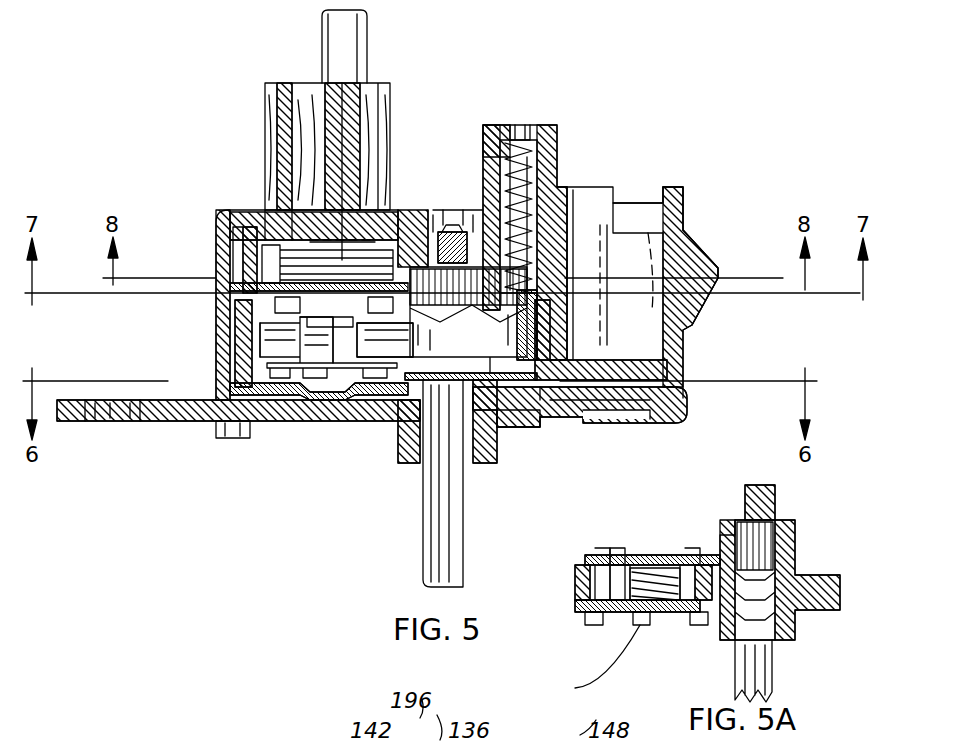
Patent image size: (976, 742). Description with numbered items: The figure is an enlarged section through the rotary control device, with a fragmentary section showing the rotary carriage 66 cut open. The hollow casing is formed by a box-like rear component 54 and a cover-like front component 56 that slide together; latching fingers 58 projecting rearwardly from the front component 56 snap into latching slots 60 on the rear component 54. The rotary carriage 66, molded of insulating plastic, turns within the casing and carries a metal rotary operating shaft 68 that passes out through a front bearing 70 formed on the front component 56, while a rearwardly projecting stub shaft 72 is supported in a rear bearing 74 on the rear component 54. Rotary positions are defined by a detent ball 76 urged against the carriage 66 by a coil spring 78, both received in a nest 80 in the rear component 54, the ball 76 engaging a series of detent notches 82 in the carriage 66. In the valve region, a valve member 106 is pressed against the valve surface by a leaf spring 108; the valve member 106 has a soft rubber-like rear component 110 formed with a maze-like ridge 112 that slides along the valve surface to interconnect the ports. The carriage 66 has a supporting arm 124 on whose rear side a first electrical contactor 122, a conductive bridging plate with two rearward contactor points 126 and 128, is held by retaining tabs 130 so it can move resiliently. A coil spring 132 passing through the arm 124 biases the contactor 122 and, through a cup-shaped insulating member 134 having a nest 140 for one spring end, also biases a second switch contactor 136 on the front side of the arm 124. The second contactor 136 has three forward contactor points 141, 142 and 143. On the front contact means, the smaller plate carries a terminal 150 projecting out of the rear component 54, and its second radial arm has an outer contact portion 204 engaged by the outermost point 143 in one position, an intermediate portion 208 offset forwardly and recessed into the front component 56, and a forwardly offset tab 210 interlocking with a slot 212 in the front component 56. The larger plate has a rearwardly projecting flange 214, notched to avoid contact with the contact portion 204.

In FIG. 5, the rear component 54 is at (690, 356).
In FIG. 5, the front component 56 is at (150, 412).
In FIG. 5, the latching fingers 58 is at (655, 210).
In FIG. 5, the latching slots 60 is at (650, 215).
In FIG. 5, the rotary carriage 66 is at (472, 345).
In FIG. 5A, the rotary carriage 66 is at (842, 610).
In FIG. 5, the rotary operating shaft 68 is at (447, 565).
In FIG. 5A, the rotary operating shaft 68 is at (772, 665).
In FIG. 5, the front bearing 70 is at (485, 463).
In FIG. 5, the stub shaft 72 is at (455, 232).
In FIG. 5A, the stub shaft 72 is at (778, 500).
In FIG. 5, the rear bearing 74 is at (420, 240).
In FIG. 5, the detent ball 76 is at (600, 230).
In FIG. 5, the coil spring 78 is at (490, 160).
In FIG. 5, the nest 80 is at (540, 135).
In FIG. 5, the detent notches 82 is at (522, 425).
In FIG. 5, the valve member 106 is at (285, 235).
In FIG. 5, the leaf spring 108 is at (274, 258).
In FIG. 5, the rear component 110 is at (264, 205).
In FIG. 5, the maze-like ridge 112 is at (270, 215).
In FIG. 5, the first electrical contactor 122 is at (367, 250).
In FIG. 5A, the first electrical contactor 122 is at (645, 575).
In FIG. 5A, the supporting arm 124 is at (578, 603).
In FIG. 5A, the contactor point 126 is at (685, 570).
In FIG. 5A, the contactor point 128 is at (600, 558).
In FIG. 5A, the retaining tabs 130 is at (700, 565).
In FIG. 5A, the coil spring 132 is at (650, 612).
In FIG. 5A, the insulating member 134 is at (640, 560).
In FIG. 5, the second switch contactor 136 is at (347, 398).
In FIG. 5A, the second switch contactor 136 is at (645, 625).
In FIG. 5A, the nest 140 is at (620, 548).
In FIG. 5A, the contactor point 141 is at (700, 625).
In FIG. 5A, the contactor point 142 is at (586, 655).
In FIG. 5A, the contactor point 143 is at (594, 625).
In FIG. 5, the terminal 150 is at (695, 302).
In FIG. 5, the outer contact portion 204 is at (290, 420).
In FIG. 5, the intermediate portion 208 is at (302, 395).
In FIG. 5, the forwardly offset tab 210 is at (247, 385).
In FIG. 5, the slot 212 is at (224, 436).
In FIG. 5, the rearwardly projecting flange 214 is at (242, 372).